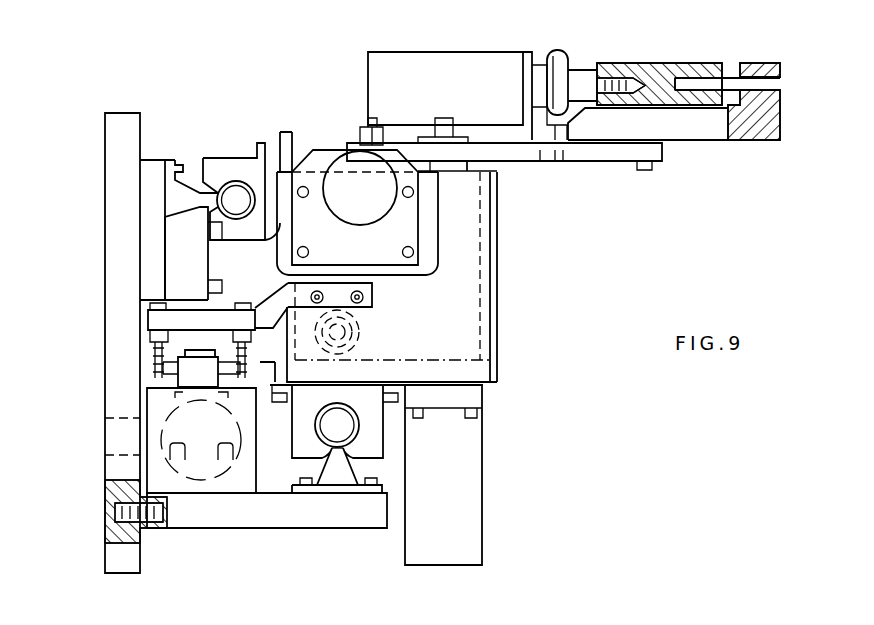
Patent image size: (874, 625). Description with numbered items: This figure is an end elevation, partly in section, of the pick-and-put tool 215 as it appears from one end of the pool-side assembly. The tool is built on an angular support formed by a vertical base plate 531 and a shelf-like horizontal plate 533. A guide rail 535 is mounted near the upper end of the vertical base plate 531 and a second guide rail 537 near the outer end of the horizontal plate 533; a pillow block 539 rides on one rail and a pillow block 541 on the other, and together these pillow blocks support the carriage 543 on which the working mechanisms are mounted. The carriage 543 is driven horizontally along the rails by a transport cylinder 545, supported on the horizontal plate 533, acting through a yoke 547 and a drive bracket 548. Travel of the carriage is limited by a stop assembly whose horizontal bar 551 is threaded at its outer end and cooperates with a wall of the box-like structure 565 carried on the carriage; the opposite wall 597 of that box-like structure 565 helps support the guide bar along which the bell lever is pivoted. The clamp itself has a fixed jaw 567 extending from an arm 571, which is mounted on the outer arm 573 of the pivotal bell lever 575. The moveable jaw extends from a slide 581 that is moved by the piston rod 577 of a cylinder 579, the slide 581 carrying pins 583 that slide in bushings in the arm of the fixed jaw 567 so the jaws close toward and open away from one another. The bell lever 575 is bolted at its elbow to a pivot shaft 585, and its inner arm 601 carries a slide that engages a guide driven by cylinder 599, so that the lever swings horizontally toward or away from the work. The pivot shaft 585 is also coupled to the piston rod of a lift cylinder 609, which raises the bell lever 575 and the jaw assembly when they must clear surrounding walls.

The pick-and-put tool 215 is at (529, 469).
The vertical base plate 531 is at (115, 281).
The horizontal plate 533 is at (335, 514).
The guide rail 535 is at (238, 208).
The guide rail 537 is at (345, 417).
The pillow block 539 is at (233, 165).
The pillow block 541 is at (375, 437).
The carriage 543 is at (283, 126).
The transport cylinder 545 is at (205, 487).
The yoke 547 is at (157, 380).
The drive bracket 548 is at (352, 299).
The horizontal bar 551 is at (378, 318).
The box-like structure 565 is at (566, 274).
The fixed jaw 567 is at (766, 112).
The arm 571 is at (590, 140).
The outer arm 573 is at (538, 149).
The bell lever 575 is at (520, 168).
The piston rod 577 is at (586, 80).
The cylinder 579 is at (392, 66).
The slide 581 is at (648, 94).
The pins 583 is at (778, 83).
The pivot shaft 585 is at (466, 128).
The wall 597 is at (278, 409).
The cylinder 599 is at (377, 165).
The inner arm 601 is at (350, 150).
The lift cylinder 609 is at (478, 440).